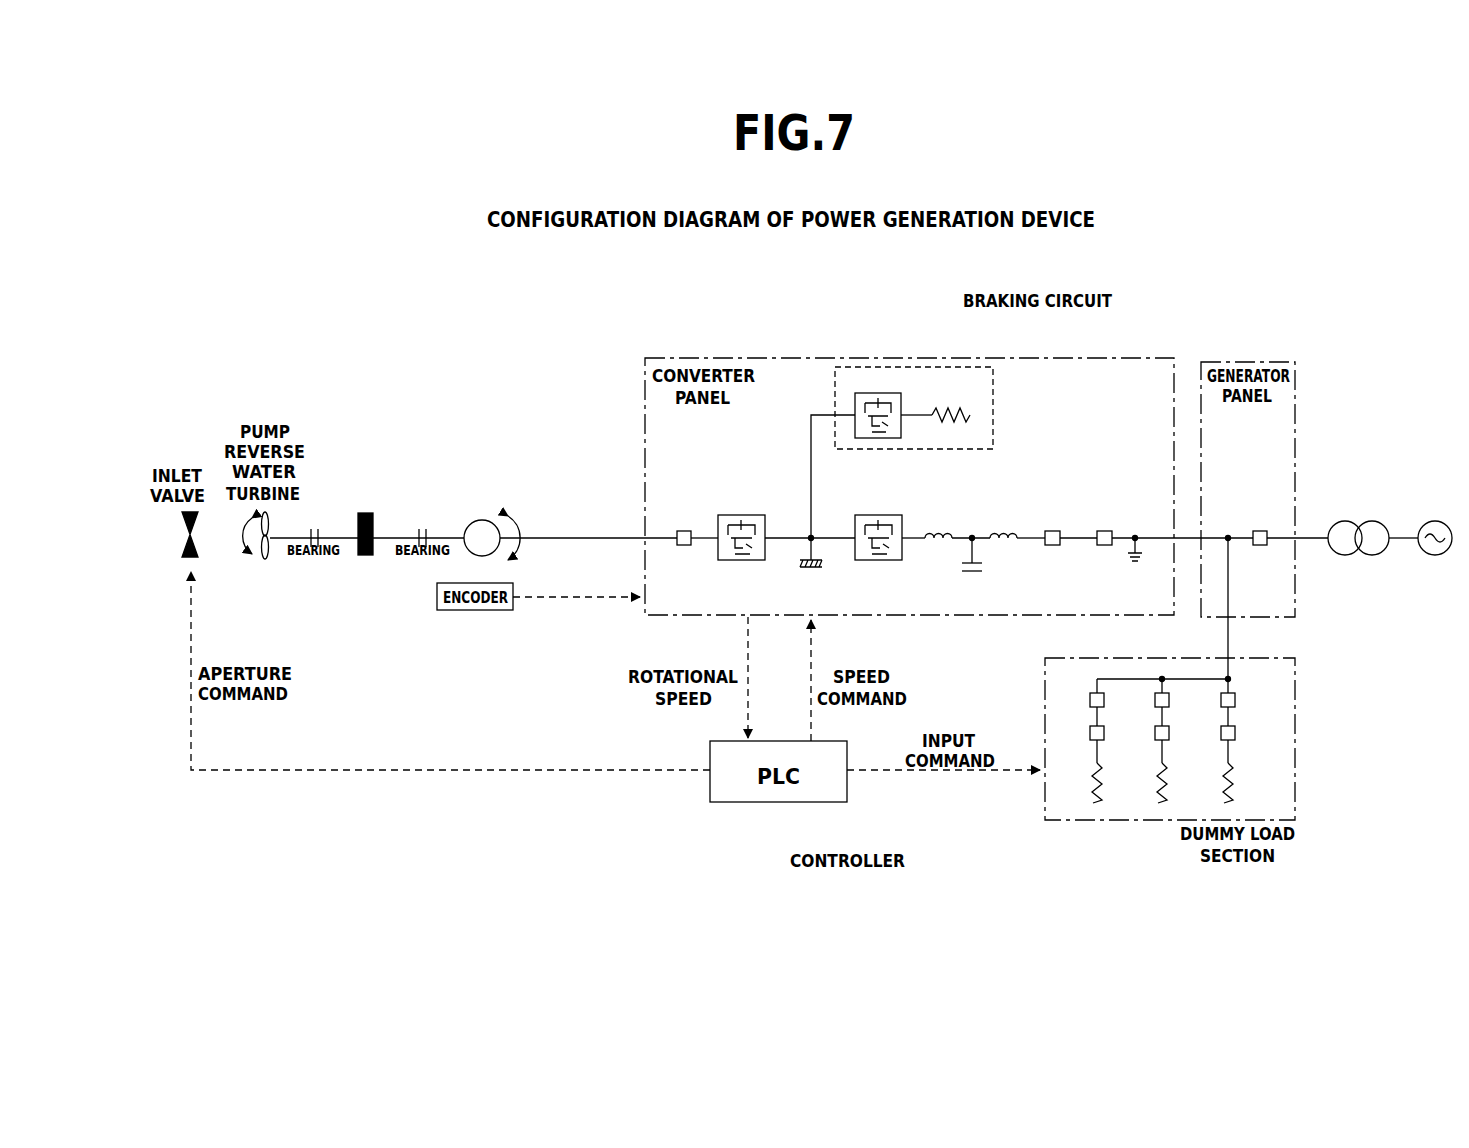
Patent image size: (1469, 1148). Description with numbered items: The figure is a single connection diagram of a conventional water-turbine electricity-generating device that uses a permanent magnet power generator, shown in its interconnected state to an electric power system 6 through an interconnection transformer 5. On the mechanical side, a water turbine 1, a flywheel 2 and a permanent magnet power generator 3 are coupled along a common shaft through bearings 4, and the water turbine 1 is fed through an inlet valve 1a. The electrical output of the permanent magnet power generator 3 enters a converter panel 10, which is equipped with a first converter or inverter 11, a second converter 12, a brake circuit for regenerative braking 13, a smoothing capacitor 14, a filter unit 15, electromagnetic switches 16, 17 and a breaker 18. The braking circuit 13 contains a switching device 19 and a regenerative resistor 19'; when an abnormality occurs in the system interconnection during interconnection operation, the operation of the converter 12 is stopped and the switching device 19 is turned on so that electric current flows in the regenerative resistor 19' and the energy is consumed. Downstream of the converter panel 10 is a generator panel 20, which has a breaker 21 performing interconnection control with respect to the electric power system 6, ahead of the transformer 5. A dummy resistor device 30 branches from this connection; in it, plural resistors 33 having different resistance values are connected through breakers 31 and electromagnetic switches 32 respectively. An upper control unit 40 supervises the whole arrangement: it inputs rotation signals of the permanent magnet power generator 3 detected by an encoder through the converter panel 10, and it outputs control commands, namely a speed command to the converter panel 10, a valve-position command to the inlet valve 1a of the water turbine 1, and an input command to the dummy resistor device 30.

The inlet valve 1a is at (183, 535).
The water turbine 1 is at (265, 560).
The flywheel 2 is at (365, 558).
The permanent magnet power generator 3 is at (487, 520).
The bearings 4 is at (314, 560).
The interconnection transformer 5 is at (1362, 521).
The electric power system 6 is at (1435, 521).
The converter panel 10 is at (690, 357).
The first converter (inverter) 11 is at (744, 562).
The second converter 12 is at (880, 562).
The brake circuit for regenerative braking 13 is at (920, 380).
The smoothing capacitor 14 is at (813, 570).
The filter unit 15 is at (972, 527).
The electromagnetic switch 16 is at (684, 546).
The electromagnetic switch 17 is at (1052, 546).
The breaker 18 is at (1104, 546).
The switching device 19 is at (870, 431).
The regenerative resistor 19' is at (989, 409).
The generator panel 20 is at (1273, 361).
The breaker 21 is at (1260, 546).
The dummy resistor device 30 is at (1155, 822).
The breakers 31 is at (1157, 706).
The electromagnetic switches 32 is at (1159, 741).
The resistors 33 is at (1167, 783).
The upper control unit 40 is at (785, 804).